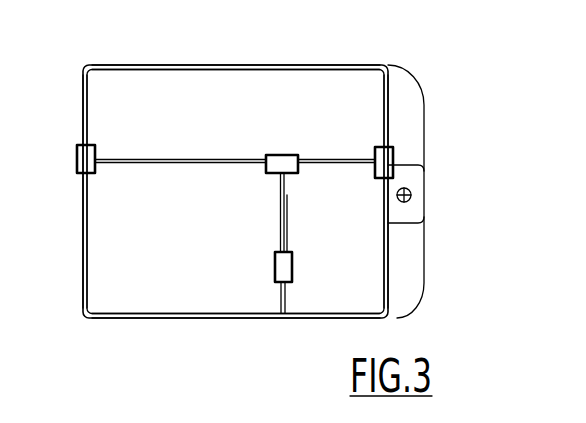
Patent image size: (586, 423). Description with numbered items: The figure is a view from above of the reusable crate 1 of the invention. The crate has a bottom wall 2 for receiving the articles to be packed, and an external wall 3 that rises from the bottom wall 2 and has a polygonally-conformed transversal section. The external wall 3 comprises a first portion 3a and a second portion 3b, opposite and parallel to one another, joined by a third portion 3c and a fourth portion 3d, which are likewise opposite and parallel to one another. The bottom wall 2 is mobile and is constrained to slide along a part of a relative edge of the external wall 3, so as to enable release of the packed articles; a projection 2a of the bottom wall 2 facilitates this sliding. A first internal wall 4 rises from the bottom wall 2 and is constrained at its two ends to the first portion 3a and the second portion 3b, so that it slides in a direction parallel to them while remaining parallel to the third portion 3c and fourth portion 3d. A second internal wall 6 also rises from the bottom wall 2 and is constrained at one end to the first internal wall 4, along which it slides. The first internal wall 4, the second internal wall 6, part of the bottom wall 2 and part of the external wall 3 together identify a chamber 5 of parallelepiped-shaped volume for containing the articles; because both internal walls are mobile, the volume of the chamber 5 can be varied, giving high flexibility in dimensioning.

The reusable crate 1 is at (495, 120).
The bottom wall 2 is at (143, 275).
The projection 2a is at (408, 291).
The external wall 3 is at (74, 134).
The first portion 3a is at (85, 257).
The second portion 3b is at (388, 246).
The third portion 3c is at (194, 318).
The fourth portion 3d is at (236, 65).
The first internal wall 4 is at (332, 160).
The chamber 5 is at (330, 286).
The second internal wall 6 is at (263, 220).